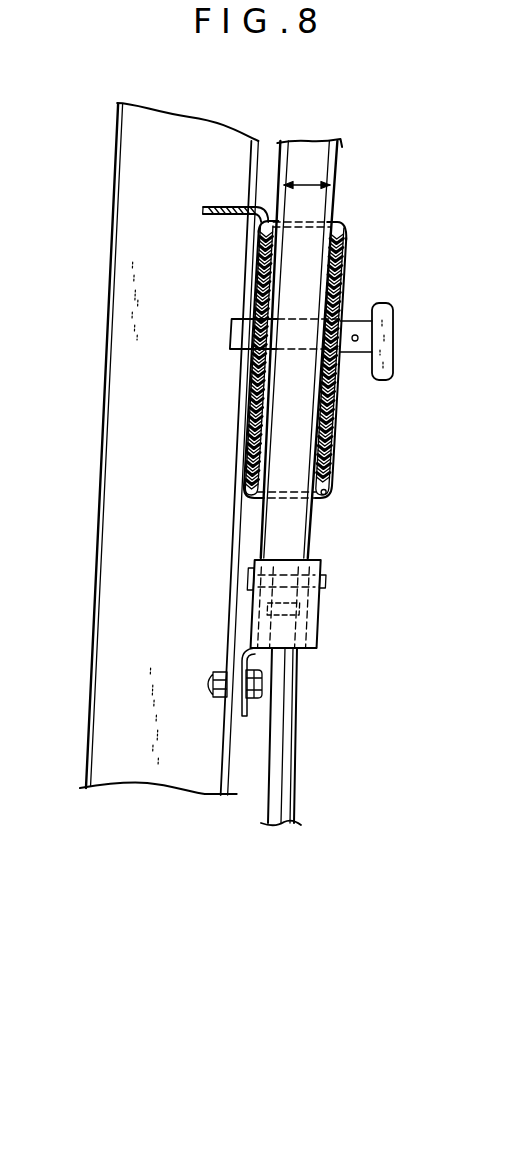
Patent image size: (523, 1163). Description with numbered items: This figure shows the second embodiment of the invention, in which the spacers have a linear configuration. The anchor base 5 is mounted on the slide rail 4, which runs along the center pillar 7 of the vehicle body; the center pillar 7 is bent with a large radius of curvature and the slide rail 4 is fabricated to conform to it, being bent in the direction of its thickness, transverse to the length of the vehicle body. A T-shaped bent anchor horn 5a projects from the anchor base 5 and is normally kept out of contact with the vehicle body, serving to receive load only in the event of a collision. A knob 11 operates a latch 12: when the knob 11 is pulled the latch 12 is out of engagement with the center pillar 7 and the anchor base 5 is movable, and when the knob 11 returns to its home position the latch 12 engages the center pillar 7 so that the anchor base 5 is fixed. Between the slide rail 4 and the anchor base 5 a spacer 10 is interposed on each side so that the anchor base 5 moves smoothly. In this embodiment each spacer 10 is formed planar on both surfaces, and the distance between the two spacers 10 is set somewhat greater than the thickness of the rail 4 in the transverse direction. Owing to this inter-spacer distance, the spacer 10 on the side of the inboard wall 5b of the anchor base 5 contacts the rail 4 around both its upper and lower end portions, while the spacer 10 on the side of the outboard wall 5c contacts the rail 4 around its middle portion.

The slide rail 4 is at (334, 161).
The anchor base 5 is at (344, 234).
The anchor horn 5a is at (213, 205).
The inboard wall 5b is at (344, 265).
The outboard wall 5c is at (250, 424).
The center pillar 7 is at (116, 158).
The spacer 10 is at (258, 452).
The knob 11 is at (394, 318).
The latch 12 is at (229, 340).